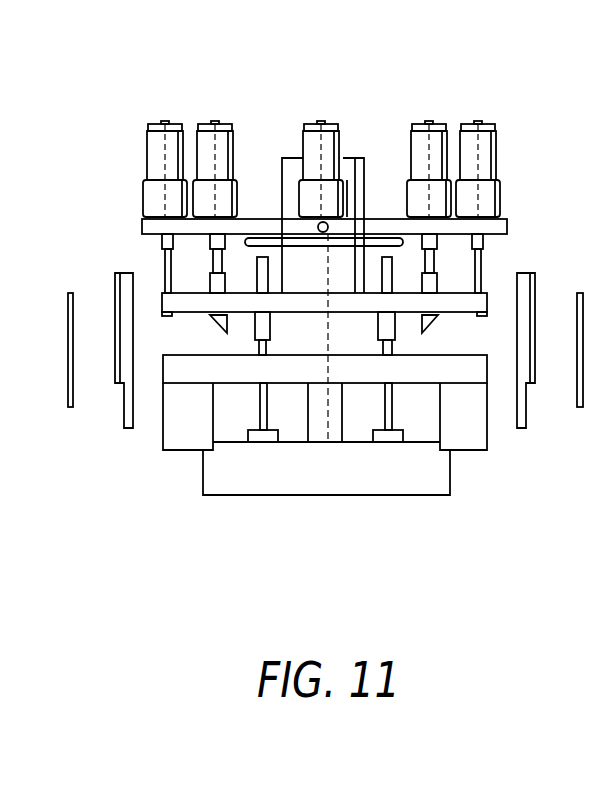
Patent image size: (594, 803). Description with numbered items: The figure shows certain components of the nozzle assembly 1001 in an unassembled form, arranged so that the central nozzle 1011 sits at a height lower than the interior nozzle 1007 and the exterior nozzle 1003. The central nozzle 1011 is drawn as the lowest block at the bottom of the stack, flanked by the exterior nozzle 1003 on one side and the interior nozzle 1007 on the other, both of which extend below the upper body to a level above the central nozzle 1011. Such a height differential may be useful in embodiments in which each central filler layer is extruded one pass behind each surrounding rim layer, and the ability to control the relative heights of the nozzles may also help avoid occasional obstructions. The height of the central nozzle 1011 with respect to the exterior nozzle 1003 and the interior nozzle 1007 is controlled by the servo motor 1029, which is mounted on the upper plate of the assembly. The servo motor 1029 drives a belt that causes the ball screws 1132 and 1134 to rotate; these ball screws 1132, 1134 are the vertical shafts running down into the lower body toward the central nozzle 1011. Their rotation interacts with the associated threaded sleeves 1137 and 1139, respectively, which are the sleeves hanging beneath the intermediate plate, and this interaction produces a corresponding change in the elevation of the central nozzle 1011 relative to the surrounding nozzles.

The nozzle assembly 1001 is at (108, 220).
The servo motor 1029 is at (343, 140).
The threaded sleeve 1137 is at (272, 326).
The threaded sleeve 1139 is at (397, 327).
The exterior nozzle 1003 is at (188, 450).
The interior nozzle 1007 is at (465, 450).
The central nozzle 1011 is at (343, 495).
The ball screw 1132 is at (260, 408).
The ball screw 1134 is at (392, 408).